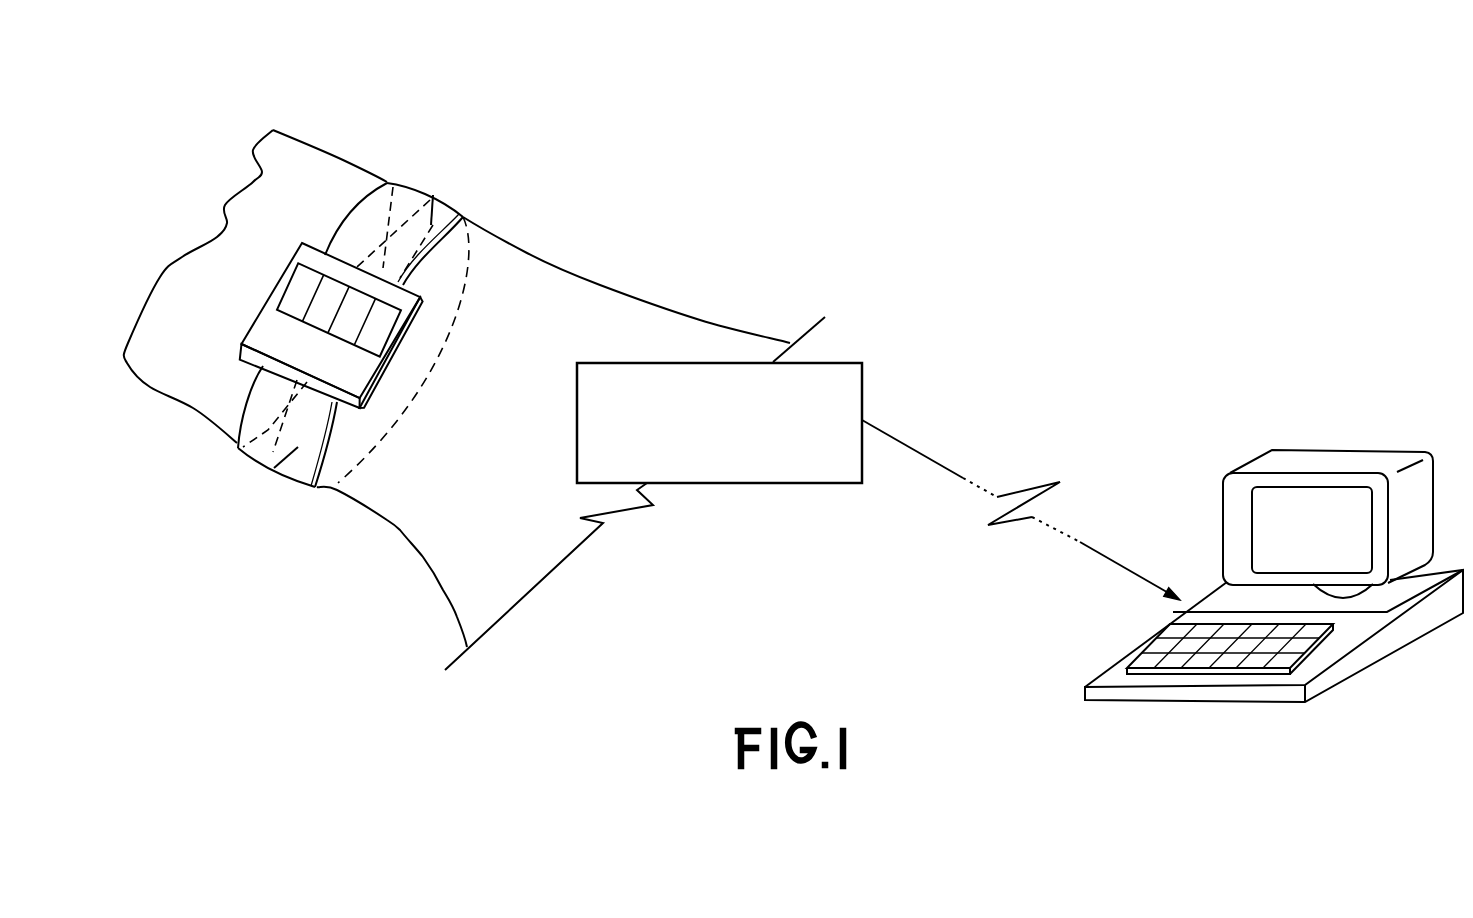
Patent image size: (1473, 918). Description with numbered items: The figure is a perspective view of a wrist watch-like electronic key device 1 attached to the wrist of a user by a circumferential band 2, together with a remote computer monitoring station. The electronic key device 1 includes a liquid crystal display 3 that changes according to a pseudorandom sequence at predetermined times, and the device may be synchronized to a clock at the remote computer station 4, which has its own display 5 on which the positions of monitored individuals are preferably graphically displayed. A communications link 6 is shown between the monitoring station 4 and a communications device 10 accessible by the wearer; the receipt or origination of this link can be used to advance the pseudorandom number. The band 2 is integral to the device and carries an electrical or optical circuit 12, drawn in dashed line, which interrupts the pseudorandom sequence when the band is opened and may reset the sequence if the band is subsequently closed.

The electronic key device 1 is at (253, 337).
The band 2 is at (403, 190).
The liquid crystal display 3 is at (300, 263).
The remote computer station 4 is at (1353, 463).
The display 5 is at (1275, 503).
The communications link 6 is at (1097, 550).
The communications device 10 is at (863, 390).
The electrical or optical circuit 12 is at (460, 210).